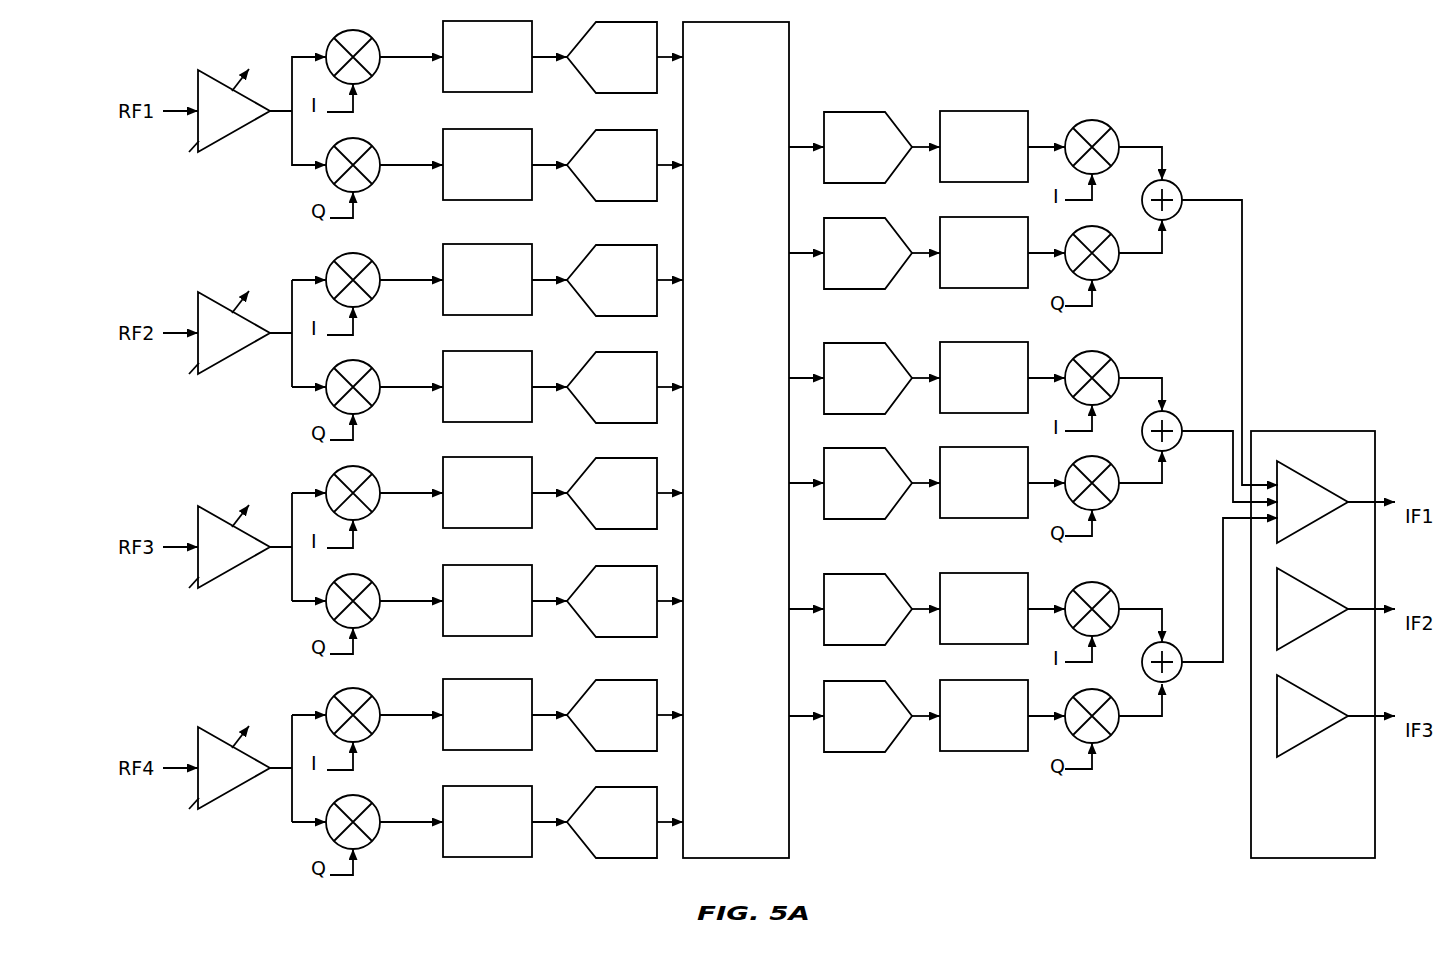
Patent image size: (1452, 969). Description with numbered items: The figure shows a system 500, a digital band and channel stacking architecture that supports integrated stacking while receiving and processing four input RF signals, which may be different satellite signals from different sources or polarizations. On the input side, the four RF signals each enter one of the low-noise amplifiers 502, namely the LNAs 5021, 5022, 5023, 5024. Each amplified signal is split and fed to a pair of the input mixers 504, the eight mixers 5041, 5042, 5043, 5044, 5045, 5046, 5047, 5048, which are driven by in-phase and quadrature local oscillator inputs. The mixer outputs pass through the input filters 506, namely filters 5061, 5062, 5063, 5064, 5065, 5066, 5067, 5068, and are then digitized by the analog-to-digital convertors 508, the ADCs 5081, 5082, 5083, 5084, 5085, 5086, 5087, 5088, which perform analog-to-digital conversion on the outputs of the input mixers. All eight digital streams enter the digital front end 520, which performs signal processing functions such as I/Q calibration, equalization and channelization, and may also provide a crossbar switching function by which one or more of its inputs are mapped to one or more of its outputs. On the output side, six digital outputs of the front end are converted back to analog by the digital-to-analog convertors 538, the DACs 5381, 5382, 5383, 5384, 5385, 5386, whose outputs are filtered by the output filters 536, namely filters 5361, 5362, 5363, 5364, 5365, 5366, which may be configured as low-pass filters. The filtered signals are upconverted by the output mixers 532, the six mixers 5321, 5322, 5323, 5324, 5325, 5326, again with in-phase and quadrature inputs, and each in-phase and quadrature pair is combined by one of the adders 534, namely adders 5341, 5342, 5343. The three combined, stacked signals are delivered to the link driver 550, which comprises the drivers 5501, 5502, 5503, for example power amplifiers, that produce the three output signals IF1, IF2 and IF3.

The system 500 is at (1290, 73).
The low-noise amplifiers 502 is at (239, 447).
The low-noise amplifier 5021 is at (223, 139).
The low-noise amplifier 5022 is at (223, 361).
The low-noise amplifier 5023 is at (223, 575).
The low-noise amplifier 5024 is at (223, 796).
The input mixers 504 is at (380, 424).
The input mixer 5041 is at (367, 33).
The input mixer 5042 is at (367, 141).
The input mixer 5043 is at (367, 256).
The input mixer 5044 is at (367, 363).
The input mixer 5045 is at (367, 469).
The input mixer 5046 is at (367, 577).
The input mixer 5047 is at (367, 691).
The input mixer 5048 is at (367, 798).
The input filters 506 is at (487, 439).
The input filter 5061 is at (487, 56).
The input filter 5062 is at (487, 164).
The input filter 5063 is at (487, 279).
The input filter 5064 is at (487, 386).
The input filter 5065 is at (487, 492).
The input filter 5066 is at (487, 600).
The input filter 5067 is at (487, 714).
The input filter 5068 is at (487, 821).
The analog-to-digital convertors 508 is at (612, 440).
The analog-to-digital convertor 5081 is at (612, 57).
The analog-to-digital convertor 5082 is at (612, 165).
The analog-to-digital convertor 5083 is at (612, 280).
The analog-to-digital convertor 5084 is at (612, 387).
The analog-to-digital convertor 5085 is at (612, 493).
The analog-to-digital convertor 5086 is at (612, 601).
The analog-to-digital convertor 5087 is at (612, 715).
The analog-to-digital convertor 5088 is at (612, 822).
The digital front end 520 is at (736, 440).
The output mixers 532 is at (1117, 435).
The output mixer 5321 is at (1103, 122).
The output mixer 5322 is at (1105, 278).
The output mixer 5323 is at (1103, 353).
The output mixer 5324 is at (1105, 508).
The output mixer 5325 is at (1103, 584).
The output mixer 5326 is at (1105, 741).
The adders 534 is at (1189, 434).
The adder 5341 is at (1176, 186).
The adder 5342 is at (1176, 417).
The adder 5343 is at (1176, 676).
The output filters 536 is at (984, 431).
The output filter 5361 is at (984, 146).
The output filter 5362 is at (984, 252).
The output filter 5363 is at (984, 377).
The output filter 5364 is at (984, 482).
The output filter 5365 is at (984, 608).
The output filter 5366 is at (984, 715).
The digital-to-analog convertors 538 is at (868, 432).
The digital-to-analog convertor 5381 is at (868, 147).
The digital-to-analog convertor 5382 is at (868, 253).
The digital-to-analog convertor 5383 is at (868, 378).
The digital-to-analog convertor 5384 is at (868, 483).
The digital-to-analog convertor 5385 is at (868, 609).
The digital-to-analog convertor 5386 is at (868, 716).
The link driver 550 is at (1313, 644).
The driver 5501 is at (1311, 528).
The driver 5502 is at (1311, 635).
The driver 5503 is at (1311, 742).